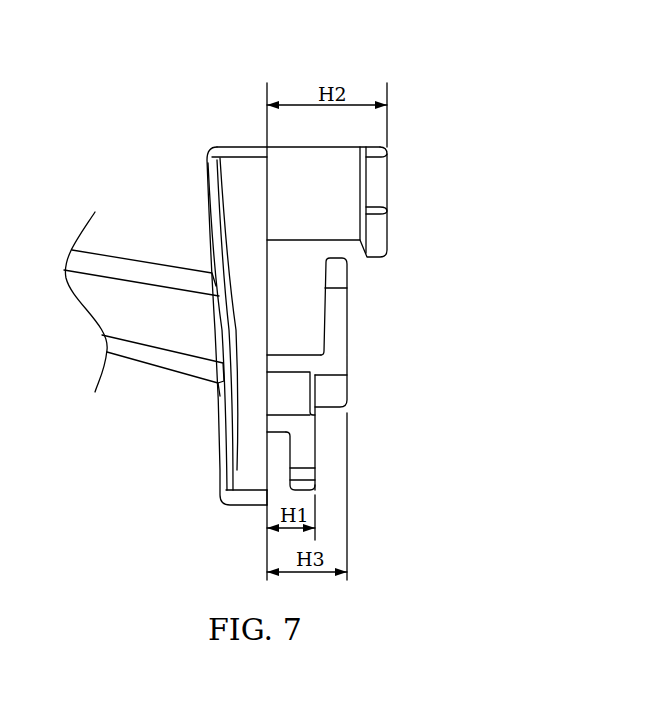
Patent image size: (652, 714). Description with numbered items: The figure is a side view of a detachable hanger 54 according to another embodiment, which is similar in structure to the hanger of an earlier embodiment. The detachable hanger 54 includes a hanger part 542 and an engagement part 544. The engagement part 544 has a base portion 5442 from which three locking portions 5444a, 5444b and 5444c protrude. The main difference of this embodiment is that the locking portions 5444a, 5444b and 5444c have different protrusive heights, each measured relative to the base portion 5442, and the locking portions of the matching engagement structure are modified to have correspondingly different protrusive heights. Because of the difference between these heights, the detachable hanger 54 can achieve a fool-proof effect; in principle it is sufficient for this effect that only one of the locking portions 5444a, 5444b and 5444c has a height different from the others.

The detachable hanger 54 is at (530, 120).
The hanger part 542 is at (150, 297).
The engagement part 544 is at (210, 451).
The base portion 5442 is at (236, 158).
The locking portion 5444a is at (300, 441).
The locking portion 5444b is at (376, 182).
The locking portion 5444c is at (337, 322).